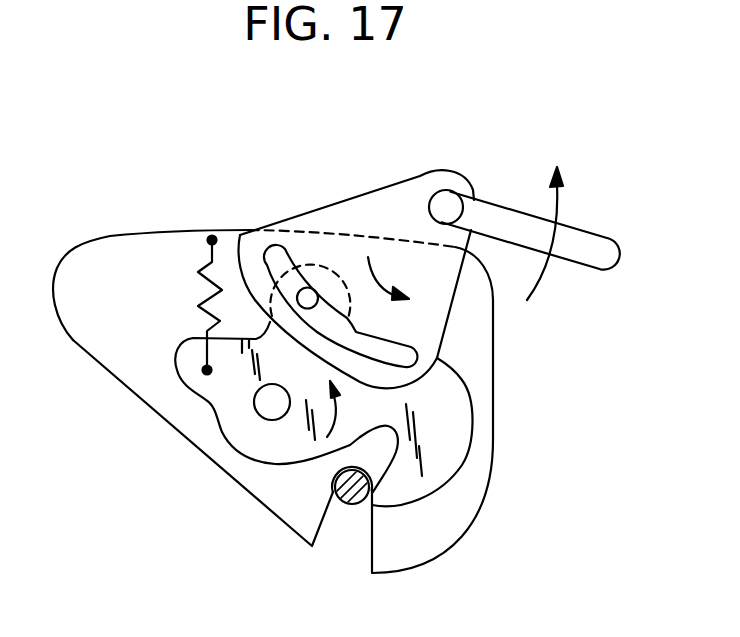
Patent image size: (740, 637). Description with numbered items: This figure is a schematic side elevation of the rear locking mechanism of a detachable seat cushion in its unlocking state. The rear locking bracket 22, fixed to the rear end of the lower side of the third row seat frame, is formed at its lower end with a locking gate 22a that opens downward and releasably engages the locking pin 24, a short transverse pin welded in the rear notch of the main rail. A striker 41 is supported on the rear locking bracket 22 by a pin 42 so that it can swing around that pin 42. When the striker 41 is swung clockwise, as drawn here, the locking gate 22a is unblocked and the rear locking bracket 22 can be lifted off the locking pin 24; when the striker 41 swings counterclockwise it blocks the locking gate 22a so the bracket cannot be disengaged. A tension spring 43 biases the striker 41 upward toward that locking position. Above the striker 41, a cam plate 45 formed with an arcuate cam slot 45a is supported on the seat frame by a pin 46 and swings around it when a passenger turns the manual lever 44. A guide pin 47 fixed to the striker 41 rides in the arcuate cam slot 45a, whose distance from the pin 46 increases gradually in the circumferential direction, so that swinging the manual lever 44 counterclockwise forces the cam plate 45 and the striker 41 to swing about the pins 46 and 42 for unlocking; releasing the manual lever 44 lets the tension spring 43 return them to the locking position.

The rear locking bracket 22 is at (122, 368).
The locking gate 22a is at (357, 543).
The locking pin 24 is at (342, 503).
The striker 41 is at (452, 433).
The pin 42 is at (272, 406).
The tension spring 43 is at (203, 276).
The manual lever 44 is at (592, 243).
The cam plate 45 is at (376, 206).
The arcuate cam slot 45a is at (278, 258).
The pin 46 is at (443, 207).
The guide pin 47 is at (314, 289).